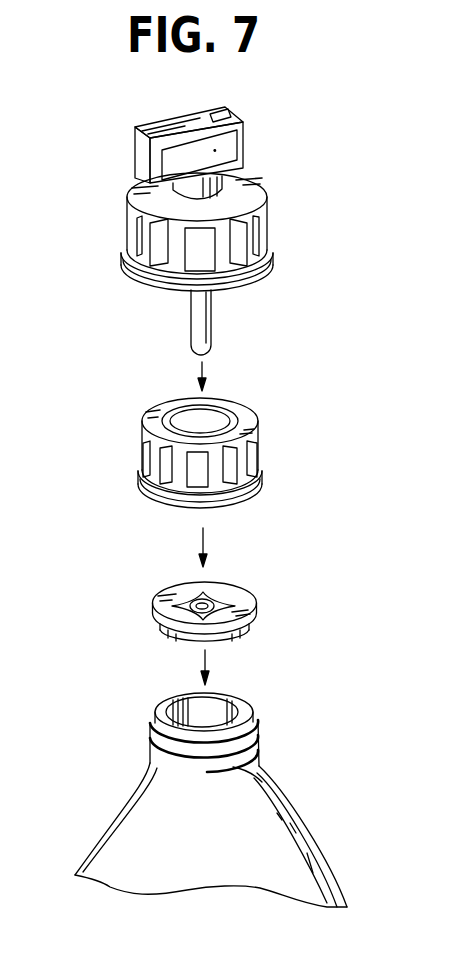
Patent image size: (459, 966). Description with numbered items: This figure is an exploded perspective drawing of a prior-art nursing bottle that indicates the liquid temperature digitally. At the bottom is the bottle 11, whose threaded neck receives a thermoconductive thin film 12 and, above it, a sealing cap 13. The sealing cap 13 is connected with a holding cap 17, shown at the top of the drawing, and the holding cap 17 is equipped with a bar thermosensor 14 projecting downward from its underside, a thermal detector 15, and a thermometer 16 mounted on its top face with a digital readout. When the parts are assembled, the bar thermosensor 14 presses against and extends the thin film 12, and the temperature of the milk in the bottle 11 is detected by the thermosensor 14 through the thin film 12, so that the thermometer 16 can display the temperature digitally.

The bottle 11 is at (287, 781).
The thermoconductive thin film 12 is at (262, 603).
The sealing cap 13 is at (258, 426).
The bar thermosensor 14 is at (220, 326).
The thermal detector 15 is at (240, 223).
The thermometer 16 is at (247, 143).
The holding cap 17 is at (267, 213).